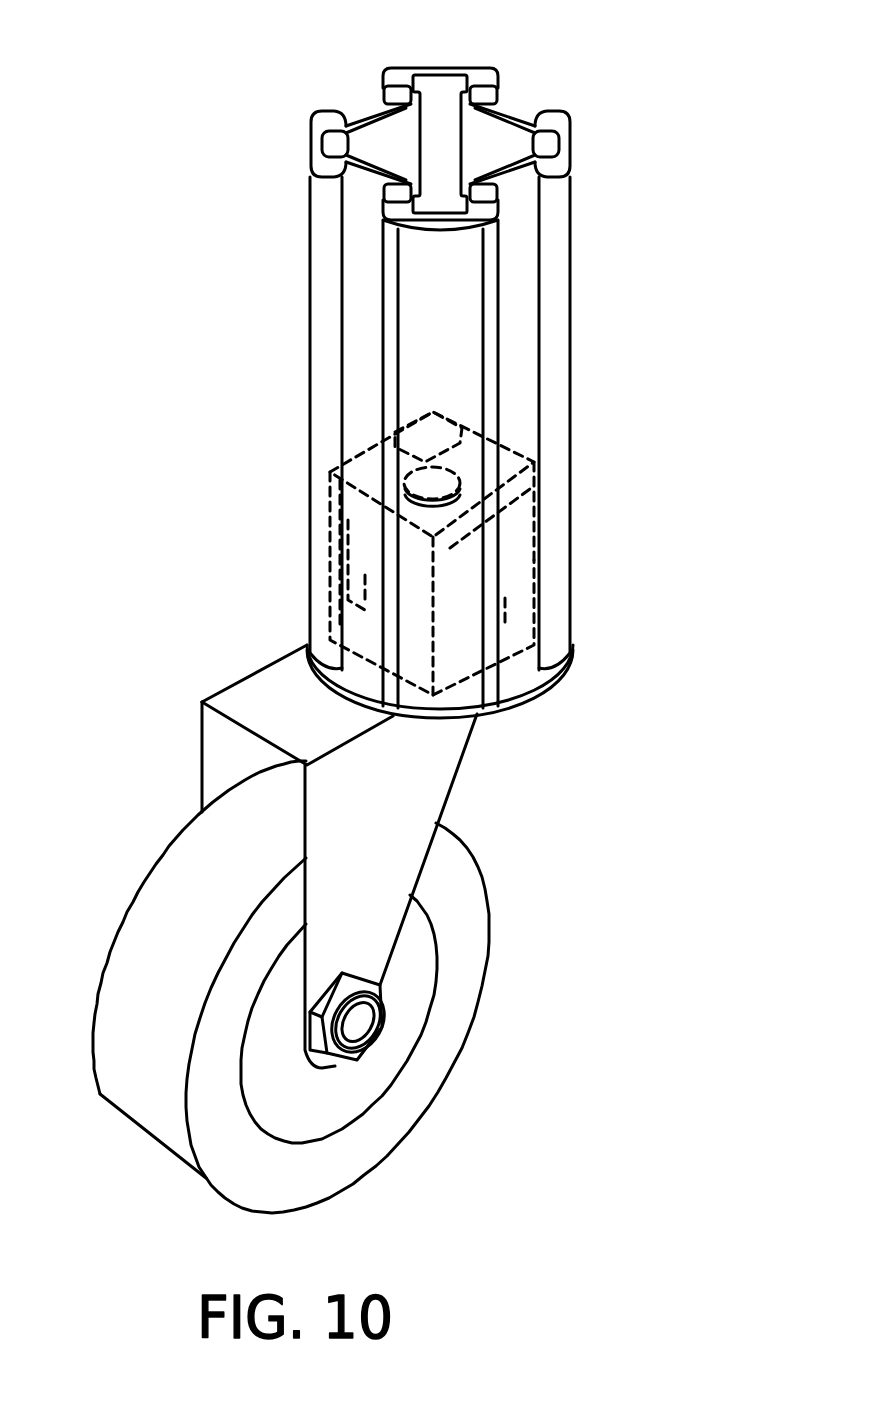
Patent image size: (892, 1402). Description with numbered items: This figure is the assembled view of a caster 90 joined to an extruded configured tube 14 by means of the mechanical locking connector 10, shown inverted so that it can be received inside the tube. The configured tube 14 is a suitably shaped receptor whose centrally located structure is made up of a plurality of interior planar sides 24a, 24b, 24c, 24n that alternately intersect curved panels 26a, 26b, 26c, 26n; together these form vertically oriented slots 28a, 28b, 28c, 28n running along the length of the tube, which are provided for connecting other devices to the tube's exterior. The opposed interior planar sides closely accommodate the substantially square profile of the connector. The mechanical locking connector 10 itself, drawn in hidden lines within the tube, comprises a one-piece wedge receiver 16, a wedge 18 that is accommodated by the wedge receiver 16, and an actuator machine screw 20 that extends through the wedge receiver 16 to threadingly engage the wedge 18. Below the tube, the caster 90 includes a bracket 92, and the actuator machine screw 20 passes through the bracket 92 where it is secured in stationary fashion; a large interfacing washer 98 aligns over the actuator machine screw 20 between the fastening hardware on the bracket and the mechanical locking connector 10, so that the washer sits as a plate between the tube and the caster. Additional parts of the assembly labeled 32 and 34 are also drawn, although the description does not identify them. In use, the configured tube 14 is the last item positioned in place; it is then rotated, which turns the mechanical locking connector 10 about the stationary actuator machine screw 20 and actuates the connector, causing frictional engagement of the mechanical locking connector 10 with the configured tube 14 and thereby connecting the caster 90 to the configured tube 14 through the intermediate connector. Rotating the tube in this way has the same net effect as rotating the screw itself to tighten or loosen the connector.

The mechanical locking connector 10 is at (305, 522).
The configured tube 14 is at (299, 573).
The wedge receiver 16 is at (540, 554).
The wedge 18 is at (538, 445).
The actuator machine screw 20 is at (352, 440).
The interior planar side 24a is at (382, 134).
The interior planar side 24b is at (488, 132).
The interior planar side 24c is at (506, 172).
The interior planar side 24n is at (343, 163).
The curved panel 26a is at (441, 74).
The curved panel 26b is at (573, 141).
The curved panel 26c is at (442, 238).
The curved panel 26n is at (308, 196).
The vertically oriented slot 28a is at (368, 100).
The vertically oriented slot 28b is at (500, 122).
The vertically oriented slot 28c is at (513, 230).
The vertically oriented slot 28n is at (348, 262).
The fastener 32 is at (508, 610).
The bolt 34 is at (332, 598).
The caster 90 is at (232, 672).
The bracket 92 is at (201, 748).
The large interfacing washer 98 is at (522, 700).